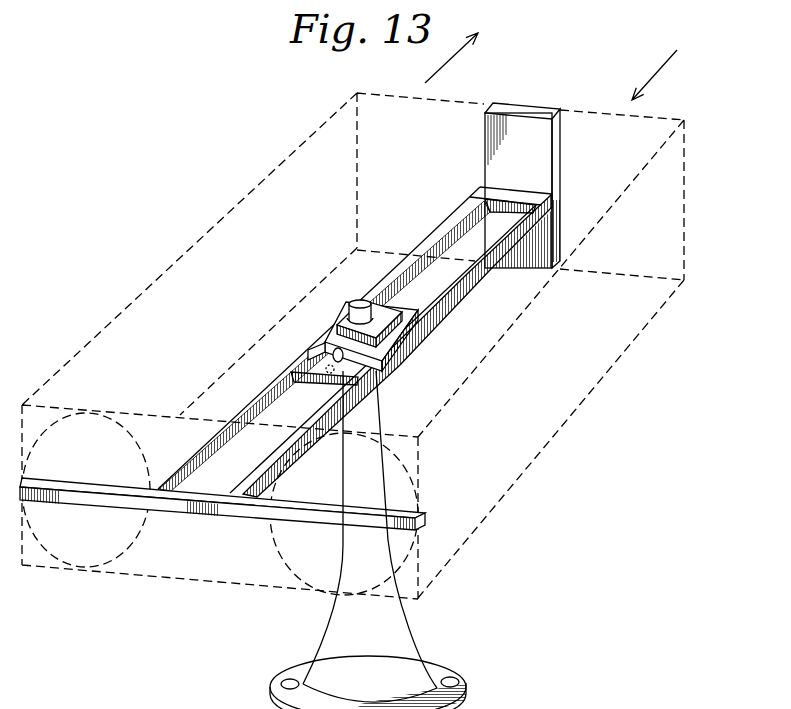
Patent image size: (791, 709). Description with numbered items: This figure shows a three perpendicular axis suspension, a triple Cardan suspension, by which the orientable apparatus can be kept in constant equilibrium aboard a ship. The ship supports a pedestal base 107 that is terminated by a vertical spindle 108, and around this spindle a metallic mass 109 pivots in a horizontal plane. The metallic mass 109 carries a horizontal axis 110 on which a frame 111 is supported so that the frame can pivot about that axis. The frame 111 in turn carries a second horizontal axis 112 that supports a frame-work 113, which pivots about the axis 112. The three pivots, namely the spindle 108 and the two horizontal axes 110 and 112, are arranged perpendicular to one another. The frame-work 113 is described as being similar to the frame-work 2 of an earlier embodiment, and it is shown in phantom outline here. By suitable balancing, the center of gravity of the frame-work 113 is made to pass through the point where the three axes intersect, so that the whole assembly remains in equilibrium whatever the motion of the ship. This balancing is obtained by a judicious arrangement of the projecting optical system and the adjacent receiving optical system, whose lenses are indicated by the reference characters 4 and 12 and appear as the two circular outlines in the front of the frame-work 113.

The frame-work 2 is at (557, 437).
The lens 4 is at (288, 553).
The lens 12 is at (102, 577).
The pedestal base 107 is at (403, 649).
The vertical spindle 108 is at (360, 303).
The metallic mass 109 is at (386, 303).
The horizontal axis 110 is at (405, 330).
The frame 111 is at (405, 314).
The horizontal axis 112 is at (333, 357).
The frame-work 113 is at (237, 510).